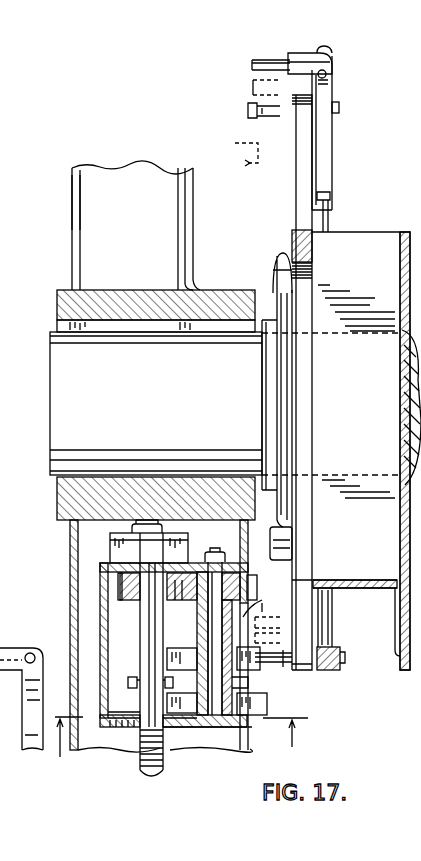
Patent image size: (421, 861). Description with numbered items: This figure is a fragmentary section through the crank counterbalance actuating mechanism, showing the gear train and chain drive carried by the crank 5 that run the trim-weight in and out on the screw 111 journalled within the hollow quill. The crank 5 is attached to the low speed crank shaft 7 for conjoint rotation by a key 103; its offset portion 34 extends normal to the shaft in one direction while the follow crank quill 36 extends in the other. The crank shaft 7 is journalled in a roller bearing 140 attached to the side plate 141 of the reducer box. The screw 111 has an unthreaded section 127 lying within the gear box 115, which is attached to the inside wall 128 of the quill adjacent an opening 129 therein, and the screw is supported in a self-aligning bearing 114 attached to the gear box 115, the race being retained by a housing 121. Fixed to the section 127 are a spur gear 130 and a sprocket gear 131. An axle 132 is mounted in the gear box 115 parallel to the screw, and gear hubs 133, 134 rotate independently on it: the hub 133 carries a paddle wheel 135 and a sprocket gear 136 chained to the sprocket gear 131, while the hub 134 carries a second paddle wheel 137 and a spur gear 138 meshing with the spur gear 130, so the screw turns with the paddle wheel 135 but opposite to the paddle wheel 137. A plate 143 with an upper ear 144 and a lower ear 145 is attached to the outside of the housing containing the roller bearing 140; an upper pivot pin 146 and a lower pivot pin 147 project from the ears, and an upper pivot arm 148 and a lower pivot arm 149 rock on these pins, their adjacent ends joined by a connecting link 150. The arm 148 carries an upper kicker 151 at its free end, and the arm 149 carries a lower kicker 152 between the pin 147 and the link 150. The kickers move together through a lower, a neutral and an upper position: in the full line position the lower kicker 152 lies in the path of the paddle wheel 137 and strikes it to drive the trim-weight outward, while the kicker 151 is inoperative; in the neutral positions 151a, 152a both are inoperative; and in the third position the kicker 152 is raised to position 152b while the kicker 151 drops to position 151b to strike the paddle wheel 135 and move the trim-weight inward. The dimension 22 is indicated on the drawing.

The crank 5 is at (80, 175).
The offset portion 34 is at (95, 189).
The key 103 is at (62, 328).
The low speed crank shaft 7 is at (70, 367).
The follow crank quill 36 is at (72, 573).
The gear box 115 is at (104, 617).
The unthreaded section 127 is at (130, 722).
The bearing 114 is at (112, 550).
The housing 121 is at (180, 545).
The screw 111 is at (142, 772).
The spur gear 130 is at (122, 588).
The sprocket gear 131 is at (131, 685).
The axle 132 is at (233, 563).
The gear hub 133 is at (200, 715).
The sprocket gear 136 is at (250, 683).
The paddle wheel 135 is at (258, 716).
The spur gear 138 is at (250, 590).
The gear hub 134 is at (243, 617).
The opening 129 is at (268, 612).
The lower kicker 152 is at (276, 661).
The lower kicker neutral position 152a is at (273, 640).
The lower kicker uppermost position 152b is at (268, 620).
The lower pivot arm 149 is at (284, 663).
The paddle wheel 137 is at (250, 163).
The plate 143 is at (300, 375).
The upper ear 144 is at (298, 183).
The upper pivot arm 148 is at (327, 163).
The upper kicker 151 is at (260, 61).
The upper kicker neutral position 151a is at (252, 82).
The upper kicker lowermost position 151b is at (262, 116).
The upper pivot pin 146 is at (340, 108).
The connecting link 150 is at (327, 222).
The roller bearing 140 is at (358, 255).
The side plate 141 is at (405, 512).
The lower ear 145 is at (352, 585).
The lower pivot pin 147 is at (343, 659).
The inside wall 128 is at (246, 742).
The distance 22 is at (185, 749).